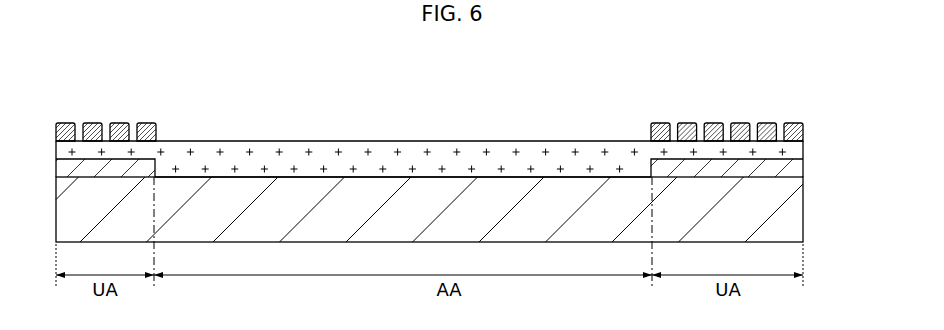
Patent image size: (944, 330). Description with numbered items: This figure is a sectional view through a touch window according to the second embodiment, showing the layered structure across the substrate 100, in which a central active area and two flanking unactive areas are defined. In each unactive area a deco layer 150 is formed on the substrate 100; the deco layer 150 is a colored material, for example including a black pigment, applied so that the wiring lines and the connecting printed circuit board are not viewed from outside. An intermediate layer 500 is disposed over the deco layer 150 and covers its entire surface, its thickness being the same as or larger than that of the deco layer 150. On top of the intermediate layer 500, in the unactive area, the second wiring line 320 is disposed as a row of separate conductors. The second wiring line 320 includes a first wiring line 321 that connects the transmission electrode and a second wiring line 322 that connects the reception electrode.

The substrate 100 is at (803, 213).
The deco layer 150 is at (803, 166).
The intermediate layer 500 is at (803, 150).
The second wiring line 320 is at (726, 99).
The first wiring line 321 is at (793, 117).
The second wiring line 322 is at (665, 123).